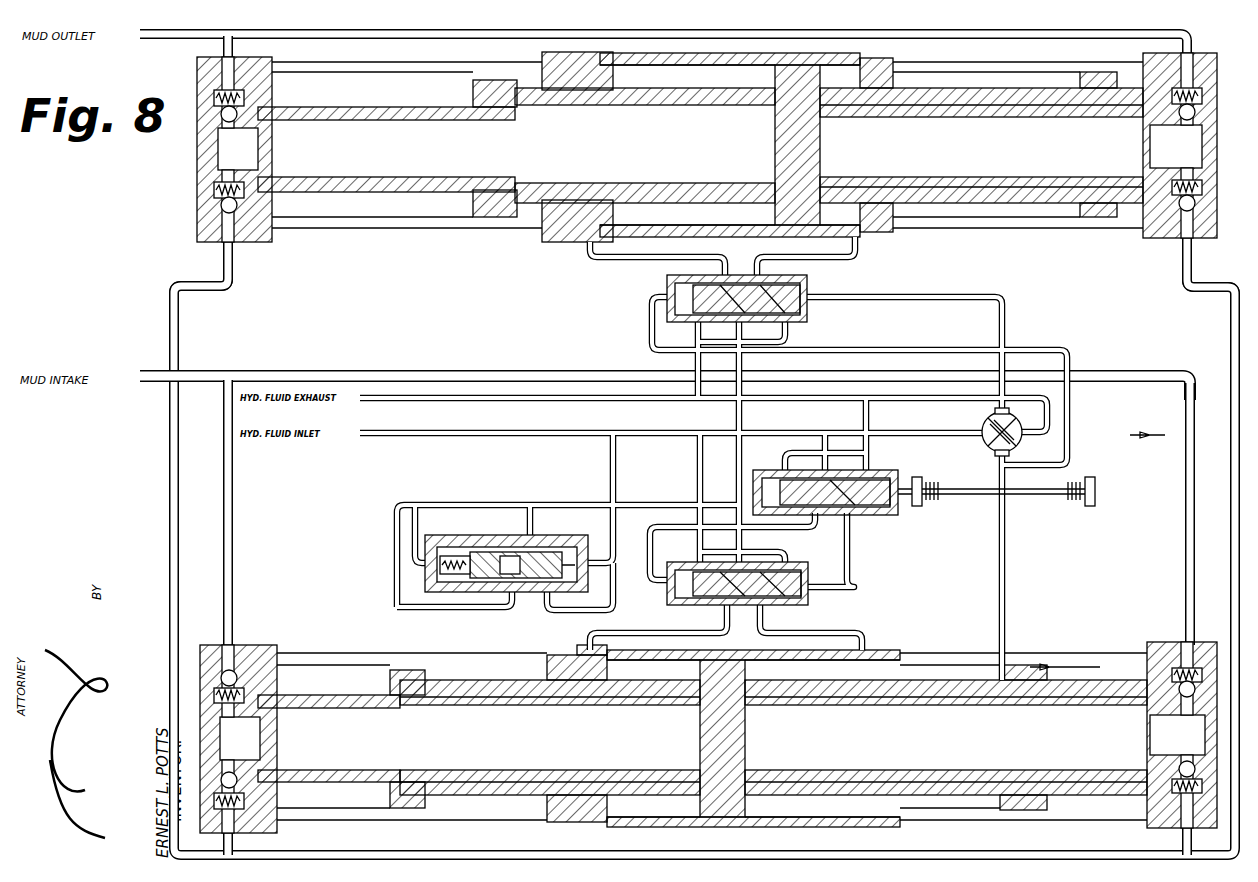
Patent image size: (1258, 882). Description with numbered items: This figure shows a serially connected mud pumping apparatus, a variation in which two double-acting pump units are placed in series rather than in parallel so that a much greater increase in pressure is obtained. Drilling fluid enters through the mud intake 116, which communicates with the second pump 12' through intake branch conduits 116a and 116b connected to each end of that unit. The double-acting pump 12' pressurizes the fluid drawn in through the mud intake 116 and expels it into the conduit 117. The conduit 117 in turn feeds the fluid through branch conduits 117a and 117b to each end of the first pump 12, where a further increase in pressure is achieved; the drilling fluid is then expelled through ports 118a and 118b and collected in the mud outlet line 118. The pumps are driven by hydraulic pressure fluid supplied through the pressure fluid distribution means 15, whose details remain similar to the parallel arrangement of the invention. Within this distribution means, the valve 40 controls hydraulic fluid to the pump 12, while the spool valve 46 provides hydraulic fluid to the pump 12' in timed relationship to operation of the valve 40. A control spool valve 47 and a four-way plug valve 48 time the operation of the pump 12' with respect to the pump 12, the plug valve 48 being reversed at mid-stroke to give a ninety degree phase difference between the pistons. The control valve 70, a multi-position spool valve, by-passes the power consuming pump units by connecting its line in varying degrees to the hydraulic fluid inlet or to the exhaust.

The first pump 12 is at (707, 163).
The second pump 12' is at (708, 722).
The pressure fluid distribution means 15 is at (418, 341).
The valve 40 is at (810, 286).
The spool valve 46 is at (812, 590).
The control spool valve 47 is at (899, 510).
The plug valve 48 is at (985, 425).
The control valve 70 is at (458, 598).
The mud intake 116 is at (208, 377).
The intake branch conduit 116a is at (236, 598).
The intake branch conduit 116b is at (1184, 607).
The conduit 117 is at (702, 850).
The branch conduit 117a is at (176, 297).
The branch conduit 117b is at (1182, 292).
The mud outlet line 118 is at (176, 40).
The port 118a is at (240, 52).
The port 118b is at (1181, 45).